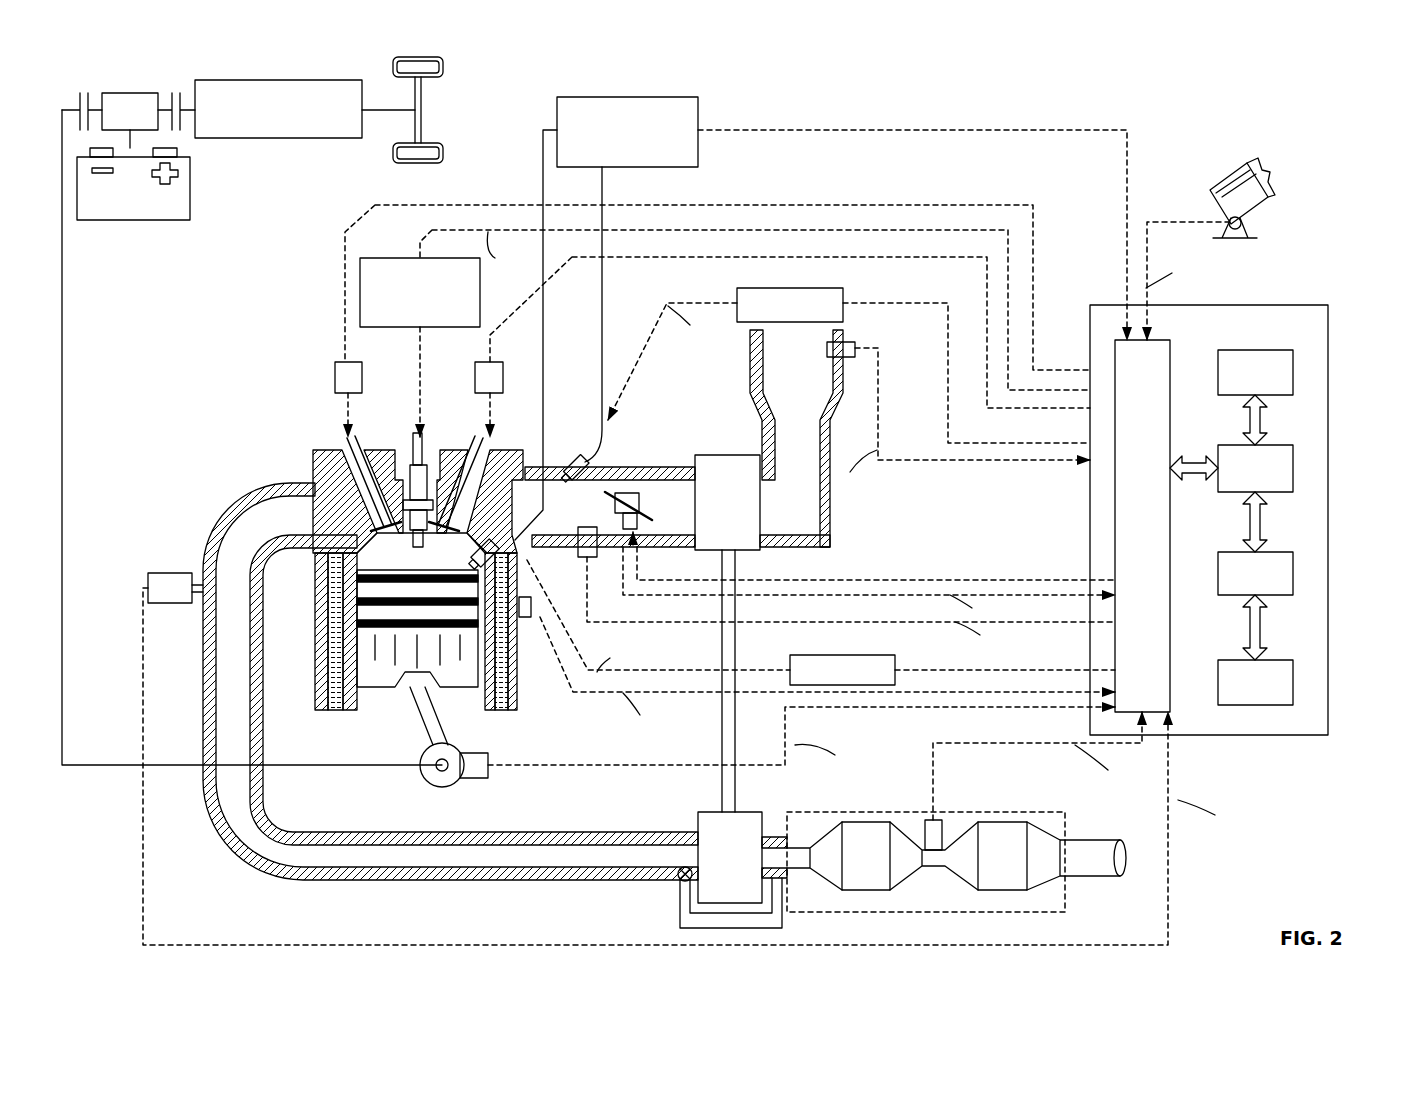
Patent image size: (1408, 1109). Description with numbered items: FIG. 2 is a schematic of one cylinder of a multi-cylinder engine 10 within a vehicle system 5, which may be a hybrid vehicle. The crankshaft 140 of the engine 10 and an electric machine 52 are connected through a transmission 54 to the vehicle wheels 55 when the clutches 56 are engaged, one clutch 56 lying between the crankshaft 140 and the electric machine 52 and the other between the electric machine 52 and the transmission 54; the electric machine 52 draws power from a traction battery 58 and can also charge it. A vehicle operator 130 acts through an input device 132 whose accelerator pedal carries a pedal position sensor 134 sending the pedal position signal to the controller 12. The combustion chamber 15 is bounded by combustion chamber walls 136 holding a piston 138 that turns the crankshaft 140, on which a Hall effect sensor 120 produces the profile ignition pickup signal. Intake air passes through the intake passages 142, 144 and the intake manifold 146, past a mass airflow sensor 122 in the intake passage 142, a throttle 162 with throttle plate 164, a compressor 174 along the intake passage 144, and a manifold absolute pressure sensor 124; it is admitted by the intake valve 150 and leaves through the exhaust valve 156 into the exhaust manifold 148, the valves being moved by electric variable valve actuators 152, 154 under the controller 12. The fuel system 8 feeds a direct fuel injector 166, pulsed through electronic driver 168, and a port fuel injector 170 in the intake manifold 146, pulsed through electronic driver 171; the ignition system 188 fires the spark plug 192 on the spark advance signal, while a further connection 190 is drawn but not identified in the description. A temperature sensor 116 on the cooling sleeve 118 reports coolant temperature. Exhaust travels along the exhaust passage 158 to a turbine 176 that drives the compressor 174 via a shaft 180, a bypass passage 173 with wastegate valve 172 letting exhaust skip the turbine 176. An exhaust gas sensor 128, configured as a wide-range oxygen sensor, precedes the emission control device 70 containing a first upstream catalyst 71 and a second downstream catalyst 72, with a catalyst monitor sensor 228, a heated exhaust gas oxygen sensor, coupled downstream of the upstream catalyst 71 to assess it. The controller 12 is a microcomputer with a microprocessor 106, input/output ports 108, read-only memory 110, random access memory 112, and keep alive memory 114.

The vehicle system 5 is at (1322, 108).
The fuel system 8 is at (663, 97).
The engine 10 is at (245, 404).
The controller 12 is at (1328, 310).
The combustion chamber 15 is at (340, 563).
The electric machine 52 is at (126, 93).
The transmission 54 is at (340, 138).
The vehicle wheels 55 is at (425, 165).
The clutch 56 is at (80, 100).
The traction battery 58 is at (133, 220).
The emission control device 70 is at (1015, 812).
The first upstream catalyst 71 is at (866, 856).
The second downstream catalyst 72 is at (1002, 856).
The microprocessor 106 is at (1293, 462).
The input/output ports 108 is at (1170, 350).
The read-only memory 110 is at (1293, 368).
The random access memory 112 is at (1293, 570).
The keep alive memory 114 is at (1293, 678).
The temperature sensor 116 is at (532, 620).
The cooling sleeve 118 is at (520, 700).
The Hall effect sensor 120 is at (482, 780).
The mass airflow sensor 122 is at (847, 342).
The manifold absolute pressure sensor 124 is at (595, 565).
The exhaust gas sensor 128 is at (148, 580).
The vehicle operator 130 is at (1268, 186).
The input device 132 is at (1214, 195).
The pedal position sensor 134 is at (1242, 223).
The combustion chamber walls 136 is at (360, 712).
The piston 138 is at (405, 700).
The crankshaft 140 is at (430, 782).
The intake passage 142 is at (796, 438).
The intake passage 144 is at (742, 520).
The intake manifold 146 is at (610, 507).
The exhaust manifold 148 is at (450, 681).
The intake valve 150 is at (440, 507).
The electric variable valve actuator 152 is at (475, 378).
The electric variable valve actuator 154 is at (335, 372).
The exhaust valve 156 is at (330, 478).
The exhaust passage 158 is at (530, 882).
The throttle 162 is at (645, 495).
The throttle plate 164 is at (618, 490).
The fuel injector 166 is at (490, 545).
The electronic driver 168 is at (792, 660).
The fuel injector 170 is at (578, 458).
The electronic driver 171 is at (738, 292).
The wastegate valve 172 is at (680, 878).
The bypass passage 173 is at (682, 912).
The compressor 174 is at (727, 502).
The turbine 176 is at (730, 857).
The shaft 180 is at (718, 788).
The ignition system 188 is at (382, 258).
The signal line 190 is at (842, 205).
The spark plug 192 is at (413, 440).
The catalyst monitor sensor 228 is at (940, 822).